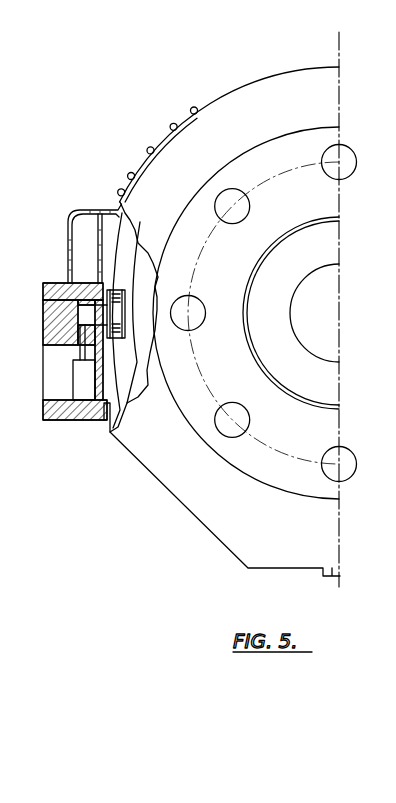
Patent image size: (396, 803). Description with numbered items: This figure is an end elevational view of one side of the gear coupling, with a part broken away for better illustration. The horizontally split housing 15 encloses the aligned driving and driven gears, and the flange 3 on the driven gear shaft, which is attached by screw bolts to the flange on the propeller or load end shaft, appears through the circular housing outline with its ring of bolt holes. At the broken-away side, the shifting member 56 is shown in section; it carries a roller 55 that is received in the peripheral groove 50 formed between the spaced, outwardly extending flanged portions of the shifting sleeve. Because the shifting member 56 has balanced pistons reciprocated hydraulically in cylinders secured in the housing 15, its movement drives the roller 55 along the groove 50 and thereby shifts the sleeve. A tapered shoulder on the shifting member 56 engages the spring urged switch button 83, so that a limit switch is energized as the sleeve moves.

The flange 3 is at (248, 470).
The housing 15 is at (116, 434).
The peripheral groove 50 is at (123, 350).
The roller 55 is at (118, 311).
The shifting member 56 is at (75, 292).
The switch button 83 is at (80, 348).